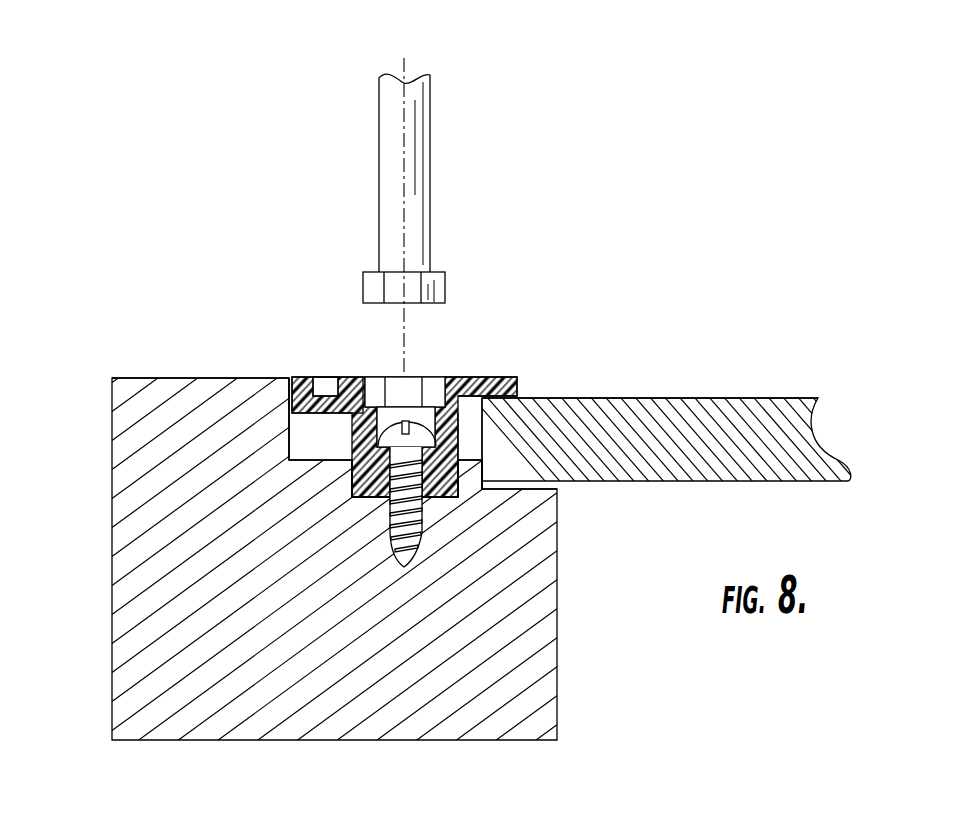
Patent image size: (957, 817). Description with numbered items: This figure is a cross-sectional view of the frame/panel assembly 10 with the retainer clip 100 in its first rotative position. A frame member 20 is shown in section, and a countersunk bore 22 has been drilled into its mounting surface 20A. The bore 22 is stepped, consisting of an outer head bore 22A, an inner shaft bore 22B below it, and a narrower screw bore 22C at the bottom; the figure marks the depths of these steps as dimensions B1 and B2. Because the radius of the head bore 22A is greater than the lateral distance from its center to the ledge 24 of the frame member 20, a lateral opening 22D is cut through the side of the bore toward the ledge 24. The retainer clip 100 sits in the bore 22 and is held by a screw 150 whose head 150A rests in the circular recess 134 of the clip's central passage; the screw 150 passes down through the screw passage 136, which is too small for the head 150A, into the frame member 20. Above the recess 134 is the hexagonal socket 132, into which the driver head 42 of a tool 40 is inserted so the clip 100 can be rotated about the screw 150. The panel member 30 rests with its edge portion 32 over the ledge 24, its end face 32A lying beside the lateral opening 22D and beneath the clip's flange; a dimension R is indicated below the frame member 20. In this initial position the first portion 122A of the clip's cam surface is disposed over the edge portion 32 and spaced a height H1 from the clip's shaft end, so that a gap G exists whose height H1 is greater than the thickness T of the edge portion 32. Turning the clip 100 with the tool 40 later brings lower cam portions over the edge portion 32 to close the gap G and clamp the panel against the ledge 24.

The frame/panel assembly 10 is at (137, 186).
The frame member 20 is at (145, 627).
The mounting surface 20A is at (150, 377).
The countersunk bore 22 is at (282, 417).
The head bore 22A is at (289, 459).
The shaft bore 22B is at (351, 481).
The screw bore 22C is at (392, 553).
The lateral opening 22D is at (481, 471).
The ledge 24 is at (545, 488).
The panel member 30 is at (700, 397).
The panel edge portion 32 is at (522, 397).
The end face of workpiece 32A is at (481, 473).
The tool 40 is at (420, 123).
The driver head 42 is at (440, 287).
The retainer clip 100 is at (435, 424).
The first portion of cam surface 122A is at (504, 377).
The socket 132 is at (373, 385).
The recess 134 is at (408, 422).
The screw passage 136 is at (432, 483).
The screw 150 is at (407, 486).
The screw head 150A is at (352, 499).
The gap G is at (497, 477).
The slot upper depth dimension B1 is at (73, 380).
The slot lower depth dimension B2 is at (31, 423).
The thickness T is at (880, 398).
The height H1 is at (906, 393).
The reach dimension R is at (518, 765).